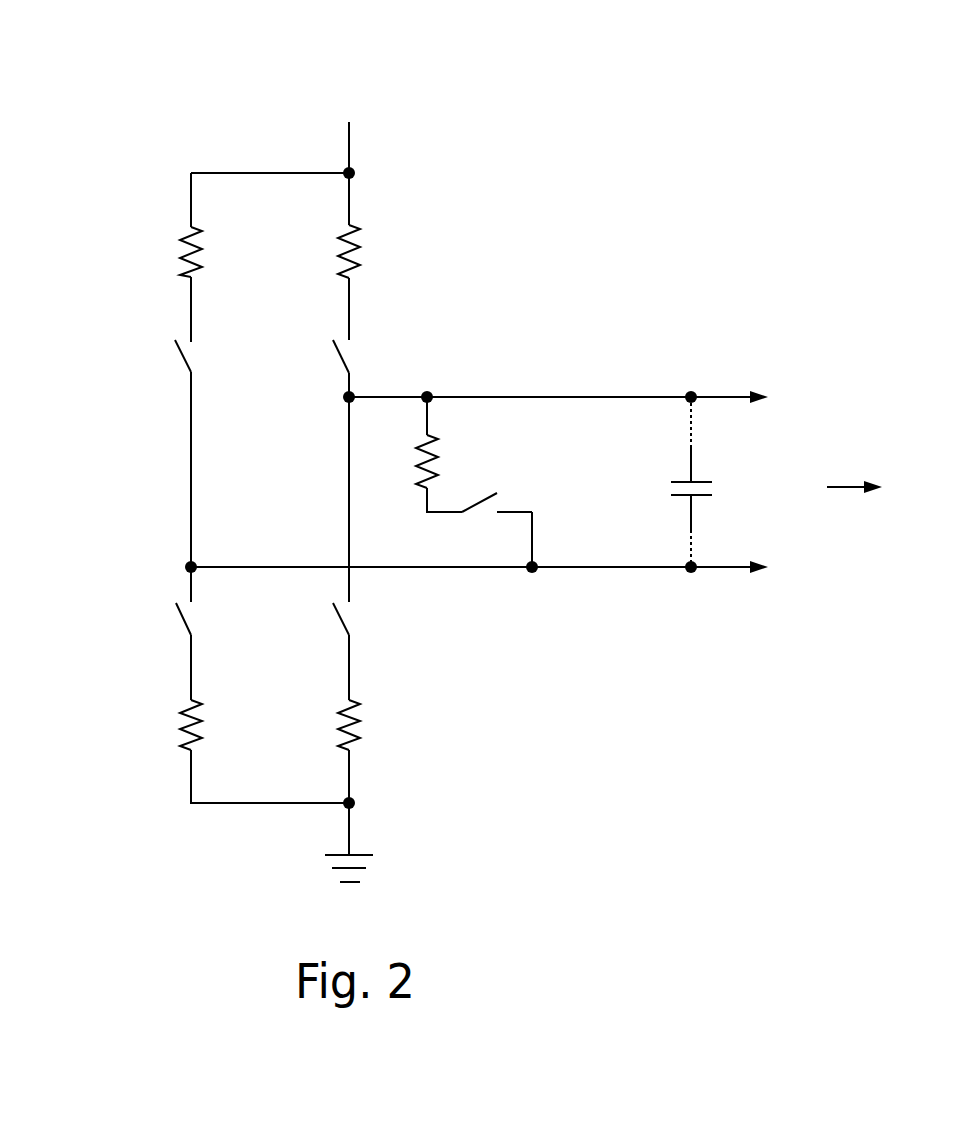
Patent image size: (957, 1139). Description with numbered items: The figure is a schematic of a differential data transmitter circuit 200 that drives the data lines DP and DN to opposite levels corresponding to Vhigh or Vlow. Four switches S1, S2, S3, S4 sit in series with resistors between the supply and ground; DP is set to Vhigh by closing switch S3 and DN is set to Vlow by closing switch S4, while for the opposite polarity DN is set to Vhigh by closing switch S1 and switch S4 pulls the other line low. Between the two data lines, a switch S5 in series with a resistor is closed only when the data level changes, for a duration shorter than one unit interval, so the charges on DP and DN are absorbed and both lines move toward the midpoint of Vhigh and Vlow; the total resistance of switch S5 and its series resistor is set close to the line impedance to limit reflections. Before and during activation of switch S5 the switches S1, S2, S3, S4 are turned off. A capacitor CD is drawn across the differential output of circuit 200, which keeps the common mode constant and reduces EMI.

The circuit 200 is at (167, 176).
The switch S1 is at (210, 356).
The switch S2 is at (210, 602).
The switch S3 is at (368, 358).
The switch S4 is at (367, 618).
The switch S5 is at (497, 524).
The capacitor CD is at (716, 482).